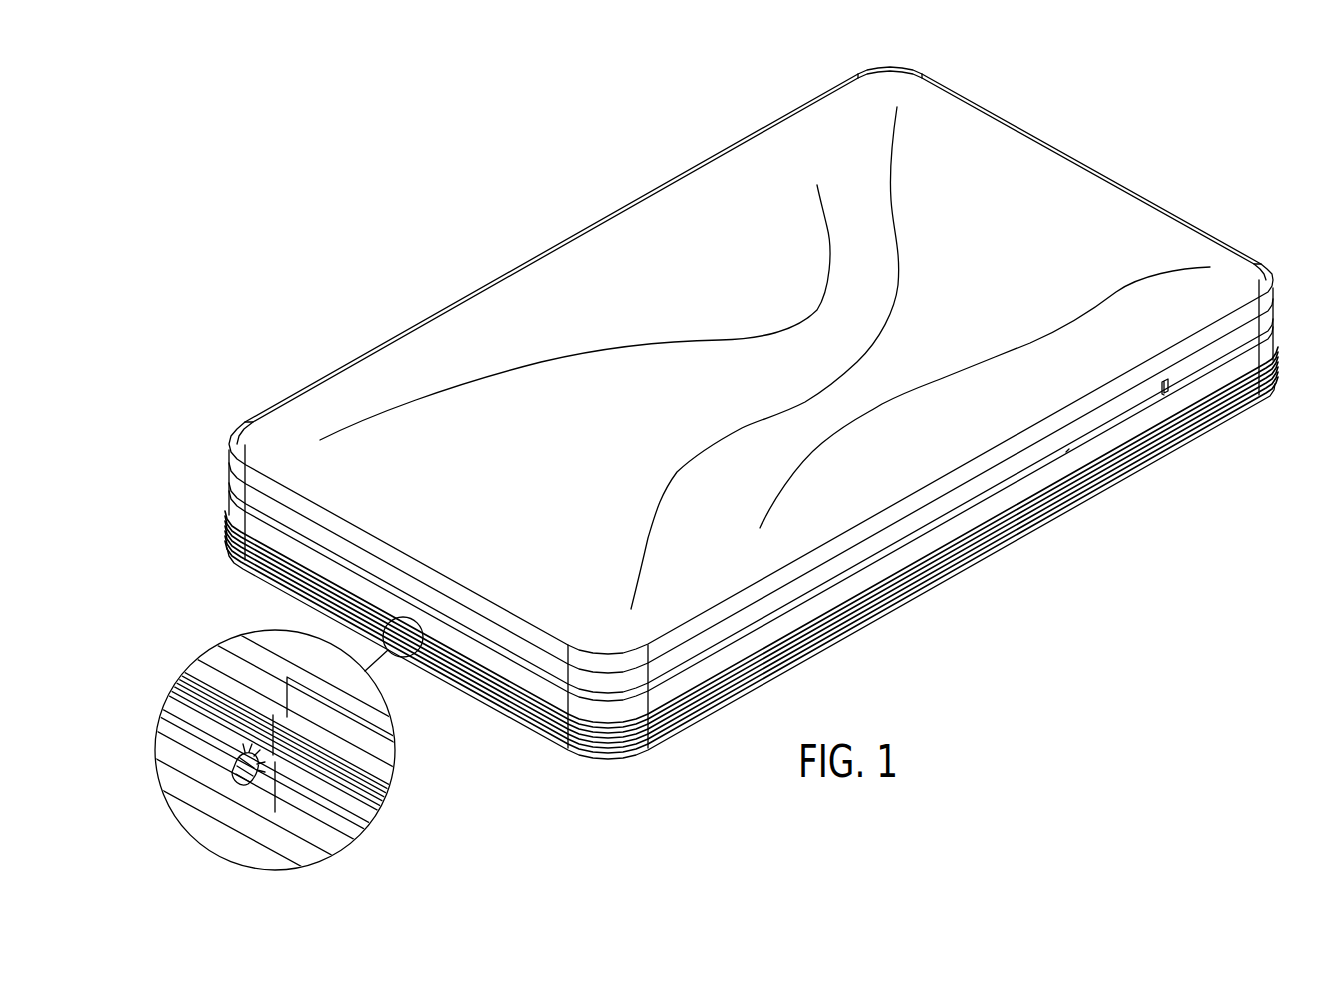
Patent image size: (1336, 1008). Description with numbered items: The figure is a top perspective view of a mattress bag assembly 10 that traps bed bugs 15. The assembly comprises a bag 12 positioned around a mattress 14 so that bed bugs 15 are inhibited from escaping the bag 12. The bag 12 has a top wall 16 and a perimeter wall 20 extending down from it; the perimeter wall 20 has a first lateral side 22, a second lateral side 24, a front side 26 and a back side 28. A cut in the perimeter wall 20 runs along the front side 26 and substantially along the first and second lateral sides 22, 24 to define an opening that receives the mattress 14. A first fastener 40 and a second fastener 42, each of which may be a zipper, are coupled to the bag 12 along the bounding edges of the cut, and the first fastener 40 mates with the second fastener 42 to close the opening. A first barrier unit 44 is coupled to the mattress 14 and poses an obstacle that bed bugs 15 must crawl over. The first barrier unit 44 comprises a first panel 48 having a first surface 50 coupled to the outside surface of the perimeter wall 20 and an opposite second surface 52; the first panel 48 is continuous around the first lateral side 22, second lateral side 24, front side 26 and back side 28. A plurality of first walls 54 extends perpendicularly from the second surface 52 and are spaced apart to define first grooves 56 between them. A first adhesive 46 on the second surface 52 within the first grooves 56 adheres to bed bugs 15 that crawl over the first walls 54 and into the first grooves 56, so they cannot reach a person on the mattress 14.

The mattress bag assembly 10 is at (632, 154).
The bag 12 is at (994, 112).
The mattress 14 is at (763, 180).
The bed bugs 15 is at (233, 772).
The top wall 16 is at (565, 272).
The perimeter wall 20 is at (1034, 486).
The first lateral side 22 is at (917, 547).
The second lateral side 24 is at (380, 352).
The front side 26 is at (297, 552).
The back side 28 is at (1098, 168).
The first fastener 40 is at (1069, 449).
The second fastener 42 is at (1099, 421).
The first barrier unit 44 is at (607, 766).
The first adhesive 46 is at (205, 725).
The first panel 48 is at (383, 720).
The first surface 50 is at (268, 658).
The second surface 52 is at (362, 744).
The first walls 54 is at (340, 825).
The first grooves 56 is at (313, 803).